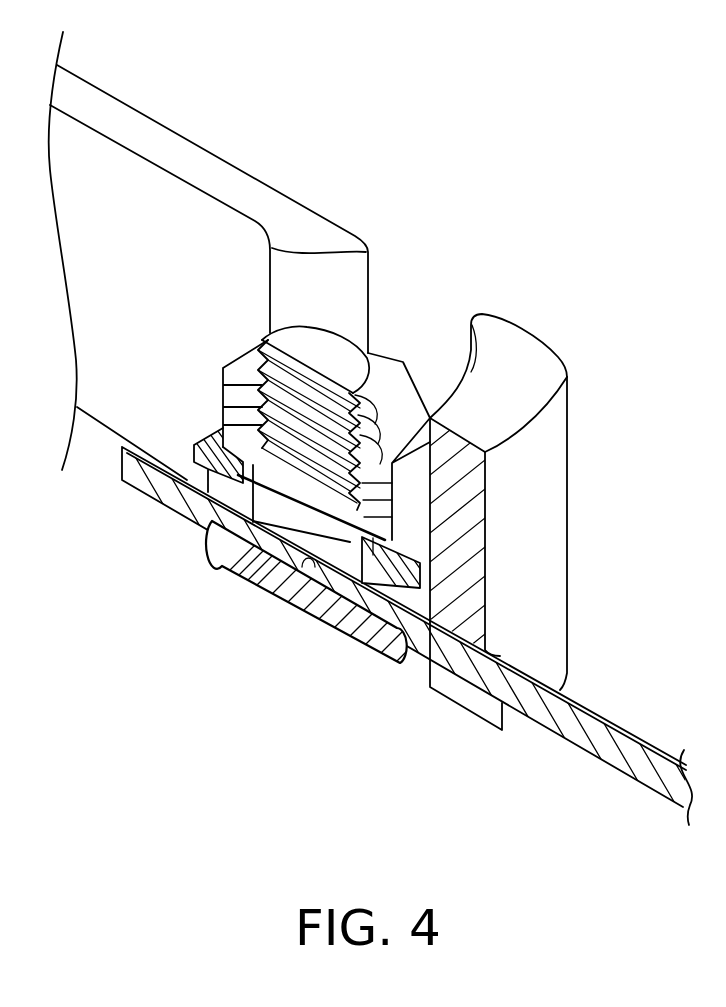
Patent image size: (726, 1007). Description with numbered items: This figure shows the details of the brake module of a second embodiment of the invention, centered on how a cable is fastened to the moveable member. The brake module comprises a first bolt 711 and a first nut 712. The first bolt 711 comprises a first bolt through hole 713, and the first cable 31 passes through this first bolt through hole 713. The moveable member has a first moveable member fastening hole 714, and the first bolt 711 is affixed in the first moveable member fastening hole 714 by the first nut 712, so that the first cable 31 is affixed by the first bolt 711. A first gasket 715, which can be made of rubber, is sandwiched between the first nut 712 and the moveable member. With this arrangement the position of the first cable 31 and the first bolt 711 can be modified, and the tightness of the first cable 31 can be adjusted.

The first cable 31 is at (608, 725).
The first bolt 711 is at (350, 647).
The first nut 712 is at (230, 398).
The first bolt through hole 713 is at (305, 557).
The first moveable member fastening hole 714 is at (218, 550).
The first gasket 715 is at (413, 572).